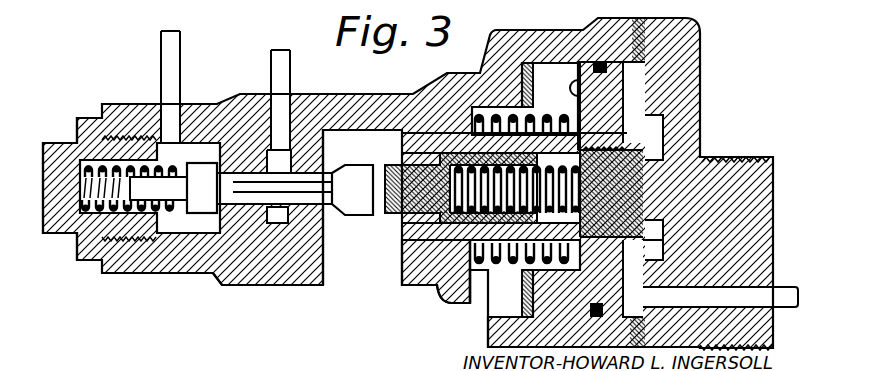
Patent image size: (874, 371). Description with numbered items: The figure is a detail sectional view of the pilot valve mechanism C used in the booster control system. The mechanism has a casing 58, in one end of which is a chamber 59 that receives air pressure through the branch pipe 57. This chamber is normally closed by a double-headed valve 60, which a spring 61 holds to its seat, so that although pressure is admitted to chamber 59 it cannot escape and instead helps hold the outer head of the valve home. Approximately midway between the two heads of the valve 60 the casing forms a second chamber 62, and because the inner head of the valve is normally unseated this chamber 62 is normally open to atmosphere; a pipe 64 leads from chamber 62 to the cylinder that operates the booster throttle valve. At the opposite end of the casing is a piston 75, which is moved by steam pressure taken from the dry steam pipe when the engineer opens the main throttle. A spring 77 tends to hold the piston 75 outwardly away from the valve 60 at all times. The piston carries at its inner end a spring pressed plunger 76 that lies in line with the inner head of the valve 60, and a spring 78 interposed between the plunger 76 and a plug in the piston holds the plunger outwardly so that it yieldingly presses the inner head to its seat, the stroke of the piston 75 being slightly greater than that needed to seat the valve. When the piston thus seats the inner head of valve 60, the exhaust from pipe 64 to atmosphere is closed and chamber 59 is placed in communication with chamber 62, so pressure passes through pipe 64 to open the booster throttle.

The valve mechanism C is at (337, 96).
The branch pipe 57 is at (162, 53).
The pipe 64 is at (278, 62).
The casing 58 is at (287, 276).
The chamber 59 is at (195, 224).
The double-headed valve 60 is at (257, 199).
The spring 61 is at (173, 214).
The chamber 62 is at (323, 228).
The piston 75 is at (575, 84).
The spring pressed plunger 76 is at (401, 162).
The spring 77 is at (526, 82).
The spring 78 is at (402, 245).